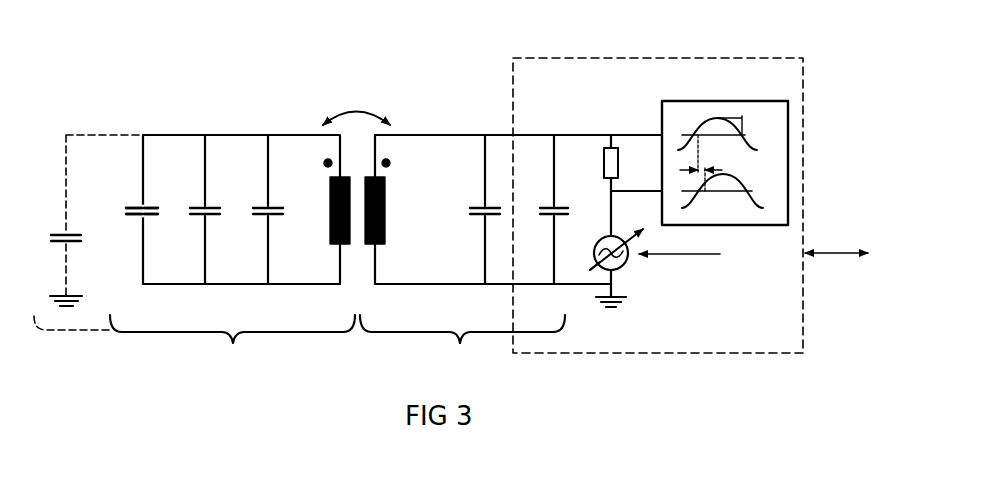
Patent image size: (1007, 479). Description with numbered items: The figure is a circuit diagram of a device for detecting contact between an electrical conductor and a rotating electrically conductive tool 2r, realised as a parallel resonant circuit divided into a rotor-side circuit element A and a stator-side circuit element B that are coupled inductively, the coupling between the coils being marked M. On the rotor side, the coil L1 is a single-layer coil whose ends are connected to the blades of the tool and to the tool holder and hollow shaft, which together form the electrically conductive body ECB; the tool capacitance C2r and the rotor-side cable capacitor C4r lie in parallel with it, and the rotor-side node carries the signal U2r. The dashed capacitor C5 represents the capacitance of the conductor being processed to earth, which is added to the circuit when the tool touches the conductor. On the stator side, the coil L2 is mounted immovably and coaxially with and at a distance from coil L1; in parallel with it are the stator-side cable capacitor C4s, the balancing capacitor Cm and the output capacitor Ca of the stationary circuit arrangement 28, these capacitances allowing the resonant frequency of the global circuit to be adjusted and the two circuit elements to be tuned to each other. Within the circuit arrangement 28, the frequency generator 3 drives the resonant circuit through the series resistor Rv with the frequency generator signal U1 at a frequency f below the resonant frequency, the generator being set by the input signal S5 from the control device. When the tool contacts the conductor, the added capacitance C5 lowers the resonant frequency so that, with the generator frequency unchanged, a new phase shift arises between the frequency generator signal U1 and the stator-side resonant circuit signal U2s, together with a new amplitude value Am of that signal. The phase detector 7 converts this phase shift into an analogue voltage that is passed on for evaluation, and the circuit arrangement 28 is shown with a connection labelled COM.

The circuit arrangement 28 is at (597, 55).
The phase detector 7 is at (725, 146).
The frequency generator 3 is at (614, 260).
The rotating electrically conductive tool 2r is at (130, 203).
The capacitance of the conductor being processed to earth C5 is at (85, 220).
The tool capacitance C2r is at (118, 213).
The electrically conductive body ECB is at (132, 216).
The receiver voltage U2r is at (170, 120).
The rotor-side cable capacitor C4r is at (188, 209).
The balancing capacitor Cm is at (254, 209).
The rotor-side coil L1 is at (323, 201).
The stator-side coil L2 is at (389, 201).
The mutual inductance M is at (356, 106).
The stator-side cable capacitor C4s is at (467, 209).
The output capacitor Ca is at (543, 209).
The stator-side resonant circuit signal U2s is at (588, 121).
The series resistor Rv is at (594, 163).
The frequency generator signal U1 is at (626, 205).
The amplitude value Am is at (745, 127).
The frequency f is at (588, 270).
The input signal S5 is at (679, 267).
The communication interface COM is at (836, 239).
The rotor-side circuit element A is at (232, 345).
The stator-side circuit element B is at (462, 345).